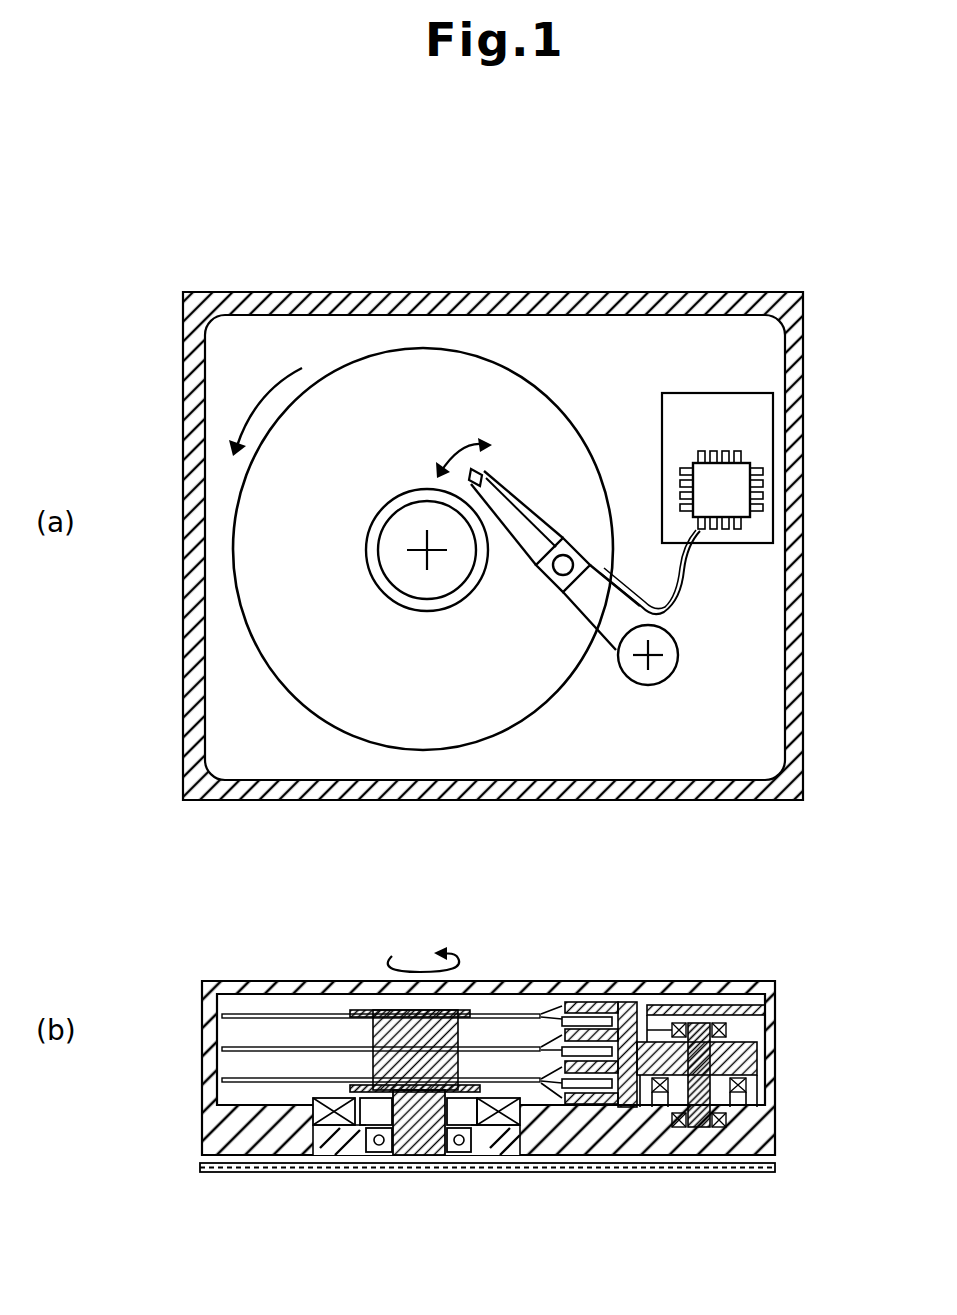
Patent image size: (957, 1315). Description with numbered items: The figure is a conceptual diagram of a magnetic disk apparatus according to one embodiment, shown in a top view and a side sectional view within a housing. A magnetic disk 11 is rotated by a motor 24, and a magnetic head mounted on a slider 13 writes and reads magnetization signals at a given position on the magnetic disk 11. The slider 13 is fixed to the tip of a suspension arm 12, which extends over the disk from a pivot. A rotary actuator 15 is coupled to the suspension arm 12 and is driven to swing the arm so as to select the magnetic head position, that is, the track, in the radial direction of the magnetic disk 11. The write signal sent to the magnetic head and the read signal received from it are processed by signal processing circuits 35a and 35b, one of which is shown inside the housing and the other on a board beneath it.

The magnetic disk 11 is at (357, 408).
The suspension arm 12 is at (517, 540).
The slider 13 is at (485, 470).
The rotary actuator 15 is at (665, 680).
The motor 24 is at (422, 1157).
The signal processing circuit 35a is at (735, 485).
The signal processing circuit 35b is at (693, 1173).